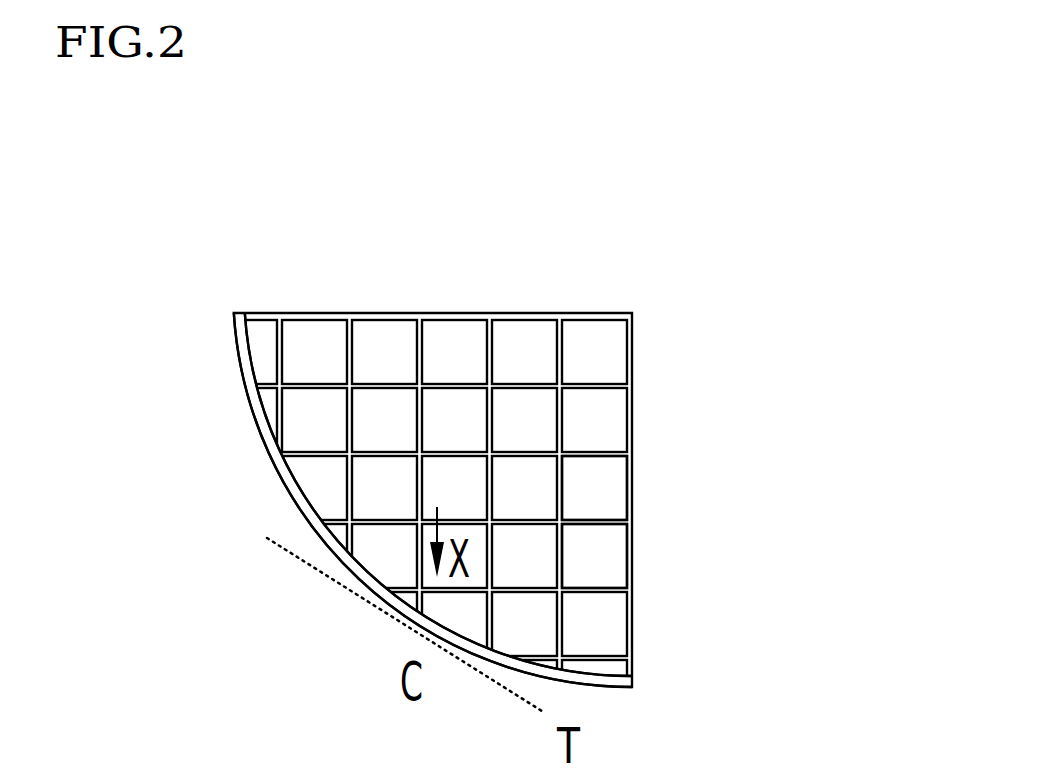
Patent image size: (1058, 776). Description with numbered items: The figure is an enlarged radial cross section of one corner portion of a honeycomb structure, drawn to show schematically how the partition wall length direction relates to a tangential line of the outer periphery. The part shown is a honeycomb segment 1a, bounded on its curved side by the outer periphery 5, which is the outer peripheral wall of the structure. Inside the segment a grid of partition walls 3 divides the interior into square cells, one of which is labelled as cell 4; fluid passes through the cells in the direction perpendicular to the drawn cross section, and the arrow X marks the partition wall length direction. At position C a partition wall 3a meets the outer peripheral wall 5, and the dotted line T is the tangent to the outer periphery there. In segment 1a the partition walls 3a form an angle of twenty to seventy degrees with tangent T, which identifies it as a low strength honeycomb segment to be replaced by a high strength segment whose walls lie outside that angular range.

The honeycomb segment 1a is at (648, 273).
The partition wall 3 is at (558, 485).
The partition wall 3a is at (594, 488).
The cell 4 is at (592, 552).
The outer periphery (wall) 5 is at (267, 457).